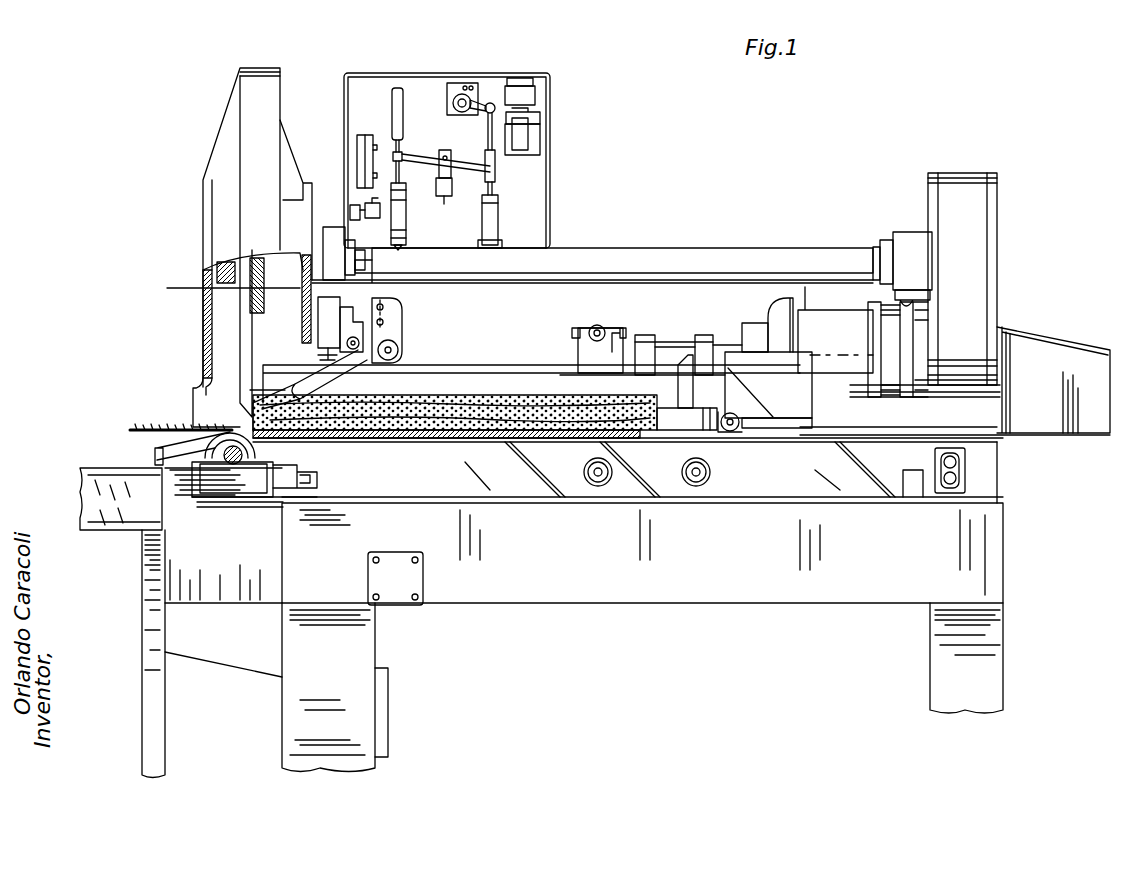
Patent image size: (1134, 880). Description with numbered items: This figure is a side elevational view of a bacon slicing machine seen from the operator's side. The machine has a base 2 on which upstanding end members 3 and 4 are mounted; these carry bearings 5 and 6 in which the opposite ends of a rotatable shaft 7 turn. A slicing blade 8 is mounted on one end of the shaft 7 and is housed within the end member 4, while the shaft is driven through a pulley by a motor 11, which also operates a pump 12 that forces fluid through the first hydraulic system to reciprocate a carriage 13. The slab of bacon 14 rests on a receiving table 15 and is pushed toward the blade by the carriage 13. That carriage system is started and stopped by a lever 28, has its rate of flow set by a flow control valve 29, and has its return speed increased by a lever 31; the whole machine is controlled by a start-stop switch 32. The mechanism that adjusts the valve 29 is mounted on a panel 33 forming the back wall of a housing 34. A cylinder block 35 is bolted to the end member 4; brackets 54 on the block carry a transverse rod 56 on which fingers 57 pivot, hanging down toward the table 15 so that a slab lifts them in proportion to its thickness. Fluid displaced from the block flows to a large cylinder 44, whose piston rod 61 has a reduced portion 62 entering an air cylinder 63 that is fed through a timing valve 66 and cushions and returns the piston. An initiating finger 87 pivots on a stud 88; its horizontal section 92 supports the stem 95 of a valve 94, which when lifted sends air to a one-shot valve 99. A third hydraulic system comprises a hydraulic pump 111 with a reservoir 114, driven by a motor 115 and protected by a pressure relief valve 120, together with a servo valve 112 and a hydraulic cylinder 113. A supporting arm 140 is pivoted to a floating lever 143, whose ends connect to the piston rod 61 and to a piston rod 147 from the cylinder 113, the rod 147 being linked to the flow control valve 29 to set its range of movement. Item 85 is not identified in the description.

The base 2 is at (657, 583).
The end member 3 is at (972, 237).
The end member 4 is at (257, 83).
The bearing 5 is at (305, 232).
The bearing 6 is at (322, 233).
The rotatable shaft 7 is at (694, 252).
The slicing blade 8 is at (245, 376).
The motor 11 is at (871, 342).
The pump 12 is at (604, 332).
The carriage 13 is at (783, 410).
The slab of bacon 14 is at (508, 430).
The receiving table 15 is at (637, 436).
The lever 28 is at (602, 486).
The flow control valve 29 is at (448, 110).
The lever 31 is at (698, 486).
The start-stop switch 32 is at (965, 468).
The panel 33 is at (547, 180).
The housing 34 is at (550, 205).
The cylinder block 35 is at (332, 318).
The large cylinder 44 is at (403, 95).
The brackets 54 is at (352, 325).
The rod 56 is at (348, 341).
The fingers 57 is at (280, 403).
The piston rod 61 is at (395, 162).
The portion of reduced diameter 62 is at (402, 170).
The air cylinder 63 is at (406, 202).
The timing valve 66 is at (360, 160).
The valve lever 85 is at (357, 143).
The initiating finger 87 is at (350, 388).
The stud 88 is at (400, 360).
The horizontal section 92 is at (396, 340).
The valve 94 is at (405, 303).
The stem 95 is at (405, 325).
The one-shot valve 99 is at (370, 215).
The hydraulic pump 111 is at (540, 113).
The servo valve 112 is at (445, 204).
The hydraulic cylinder 113 is at (508, 218).
The fluid reservoir 114 is at (540, 147).
The motor 115 is at (540, 80).
The pressure relief valve 120 is at (528, 132).
The supporting arm 140 is at (450, 156).
The floating lever 143 is at (428, 156).
The piston rod 147 is at (496, 184).